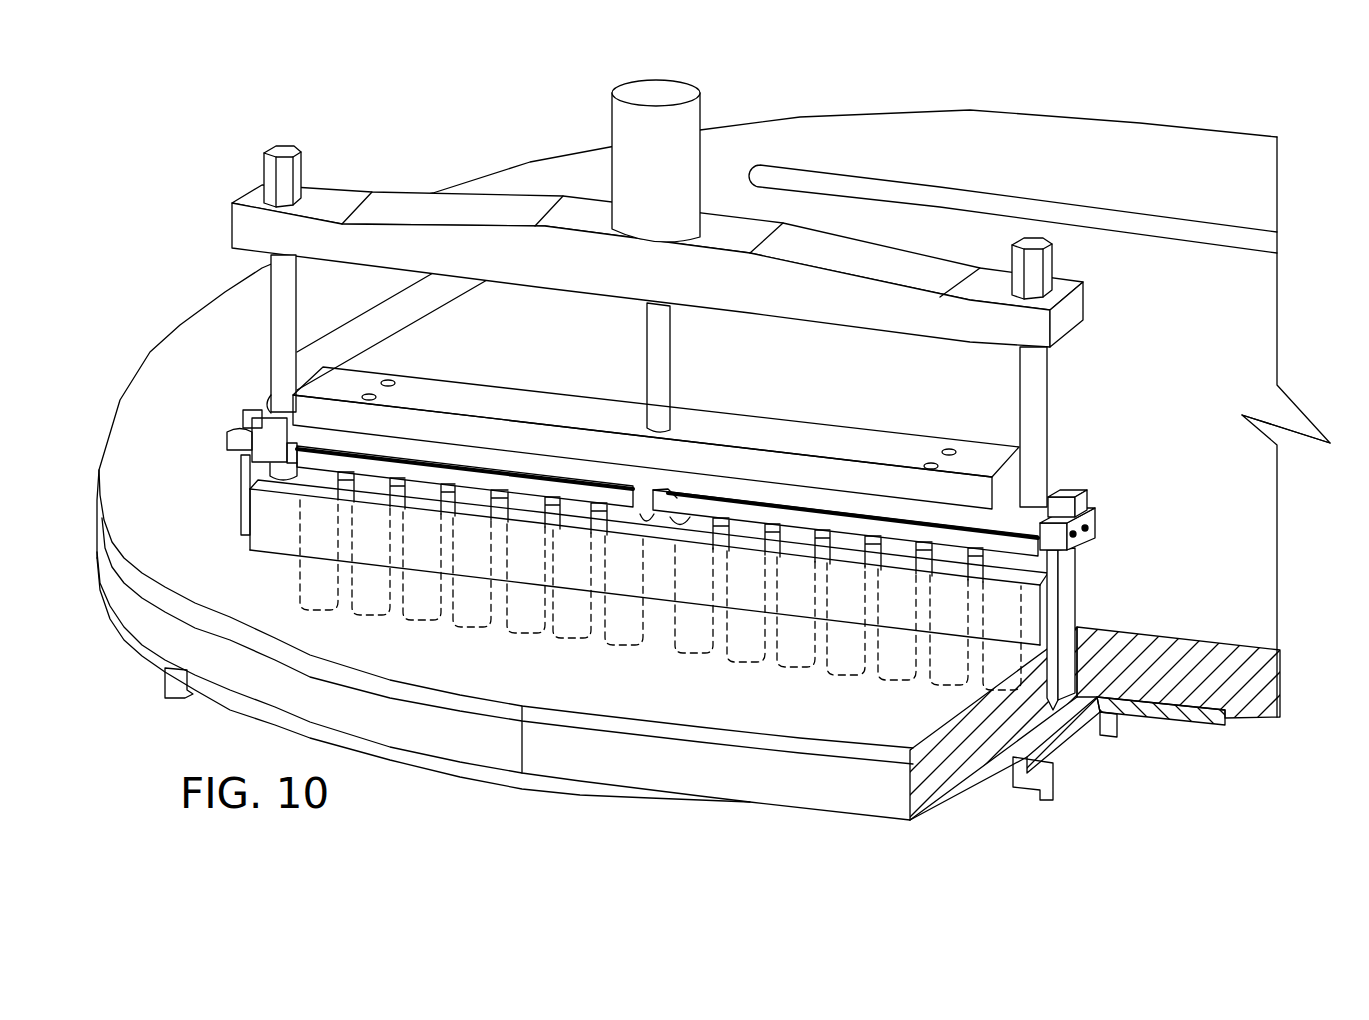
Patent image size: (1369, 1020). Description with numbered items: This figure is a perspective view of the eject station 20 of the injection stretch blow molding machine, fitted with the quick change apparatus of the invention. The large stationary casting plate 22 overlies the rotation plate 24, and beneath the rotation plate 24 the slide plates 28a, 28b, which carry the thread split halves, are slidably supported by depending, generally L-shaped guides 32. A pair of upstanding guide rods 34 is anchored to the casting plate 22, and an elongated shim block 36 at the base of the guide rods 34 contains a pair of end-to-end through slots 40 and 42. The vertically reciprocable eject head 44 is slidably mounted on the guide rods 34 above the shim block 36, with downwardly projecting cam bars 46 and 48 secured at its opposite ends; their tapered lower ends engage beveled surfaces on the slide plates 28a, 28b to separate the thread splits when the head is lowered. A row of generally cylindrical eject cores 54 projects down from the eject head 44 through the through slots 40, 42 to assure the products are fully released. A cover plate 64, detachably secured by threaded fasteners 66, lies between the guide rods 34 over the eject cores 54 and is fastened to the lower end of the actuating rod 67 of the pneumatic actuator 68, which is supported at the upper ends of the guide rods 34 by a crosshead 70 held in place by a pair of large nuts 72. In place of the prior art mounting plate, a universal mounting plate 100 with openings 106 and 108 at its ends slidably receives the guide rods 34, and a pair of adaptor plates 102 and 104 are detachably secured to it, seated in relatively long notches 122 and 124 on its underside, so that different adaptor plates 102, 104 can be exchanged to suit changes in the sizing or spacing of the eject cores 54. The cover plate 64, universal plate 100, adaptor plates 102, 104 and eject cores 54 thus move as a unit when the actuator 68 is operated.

The eject station 20 is at (1102, 347).
The casting plate 22 is at (1265, 578).
The rotation plate 24 is at (563, 785).
The slide plate 28a is at (993, 787).
The slide plate 28b is at (1080, 733).
The L-shaped guides 32 is at (167, 697).
The guide rods 34 is at (278, 338).
The shim block 36 is at (272, 515).
The through slot 40 is at (397, 487).
The through slot 42 is at (772, 533).
The eject head 44 is at (806, 403).
The cam bar 46 is at (245, 475).
The cam bar 48 is at (1067, 580).
The eject cores 54 is at (460, 488).
The cover plate 64 is at (555, 407).
The threaded fasteners 66 is at (369, 396).
The actuating rod 67 is at (672, 358).
The pneumatic actuator 68 is at (720, 88).
The crosshead 70 is at (850, 253).
The nuts 72 is at (297, 163).
The universal mounting plate 100 is at (265, 440).
The adaptor plate 102 is at (585, 492).
The adaptor plate 104 is at (857, 523).
The opening 106 is at (268, 392).
The opening 108 is at (1047, 490).
The notch 122 is at (282, 432).
The notch 124 is at (667, 497).